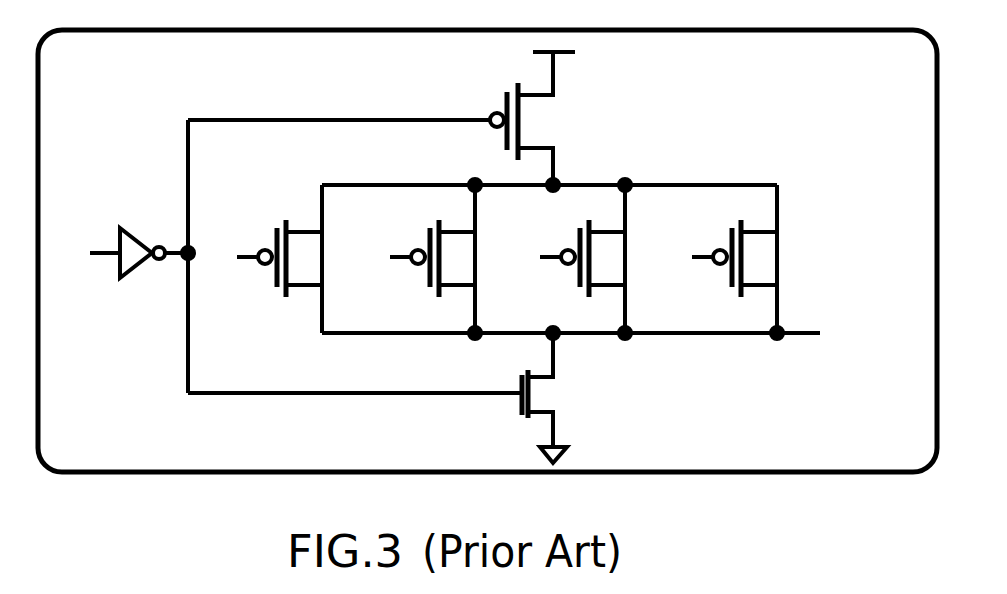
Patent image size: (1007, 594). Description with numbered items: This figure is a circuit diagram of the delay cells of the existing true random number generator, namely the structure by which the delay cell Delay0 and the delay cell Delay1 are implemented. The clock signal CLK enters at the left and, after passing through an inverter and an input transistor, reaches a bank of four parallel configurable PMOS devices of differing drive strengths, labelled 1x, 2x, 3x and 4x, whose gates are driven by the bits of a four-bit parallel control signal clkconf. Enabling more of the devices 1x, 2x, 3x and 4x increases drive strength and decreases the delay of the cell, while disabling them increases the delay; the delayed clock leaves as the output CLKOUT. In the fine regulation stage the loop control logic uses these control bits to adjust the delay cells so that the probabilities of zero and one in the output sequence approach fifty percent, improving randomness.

The 1x configurable PMOS driver transistor (clkconf[0]) 1x is at (272, 259).
The 2x configurable PMOS driver transistor (clkconf[1]) 2x is at (425, 259).
The 3x configurable PMOS driver transistor (clkconf[2]) 3x is at (575, 259).
The 4x configurable PMOS driver transistor (clkconf[3]) 4x is at (731, 259).
The clock signal CLK is at (125, 258).
The clock output node CLKOUT is at (625, 318).